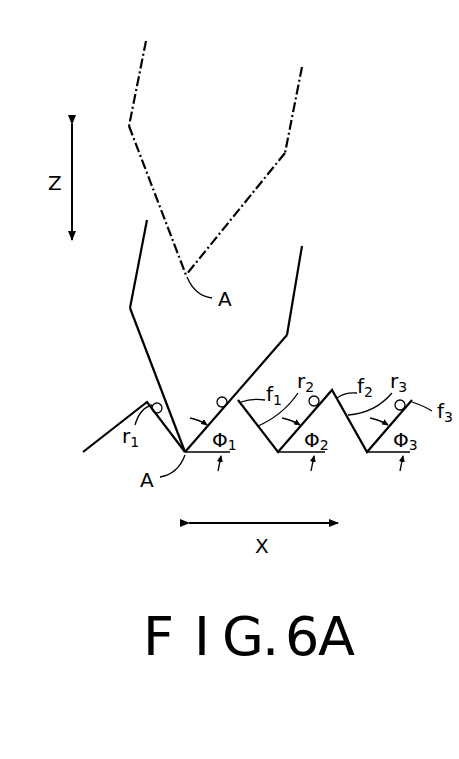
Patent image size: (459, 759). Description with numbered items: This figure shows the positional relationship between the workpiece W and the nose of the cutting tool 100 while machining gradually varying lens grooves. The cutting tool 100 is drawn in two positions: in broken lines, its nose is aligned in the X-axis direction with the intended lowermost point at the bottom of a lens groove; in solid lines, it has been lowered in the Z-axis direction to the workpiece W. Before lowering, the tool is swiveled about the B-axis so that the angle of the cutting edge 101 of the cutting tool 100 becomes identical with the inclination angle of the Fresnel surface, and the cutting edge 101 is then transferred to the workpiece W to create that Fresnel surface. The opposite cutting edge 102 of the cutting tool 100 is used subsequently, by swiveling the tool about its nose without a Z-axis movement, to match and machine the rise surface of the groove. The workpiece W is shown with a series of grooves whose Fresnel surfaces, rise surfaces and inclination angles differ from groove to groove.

The cutting tool 100 is at (272, 135).
The cutting edge 101 is at (265, 182).
The cutting edge 102 is at (148, 178).
The workpiece W is at (419, 367).